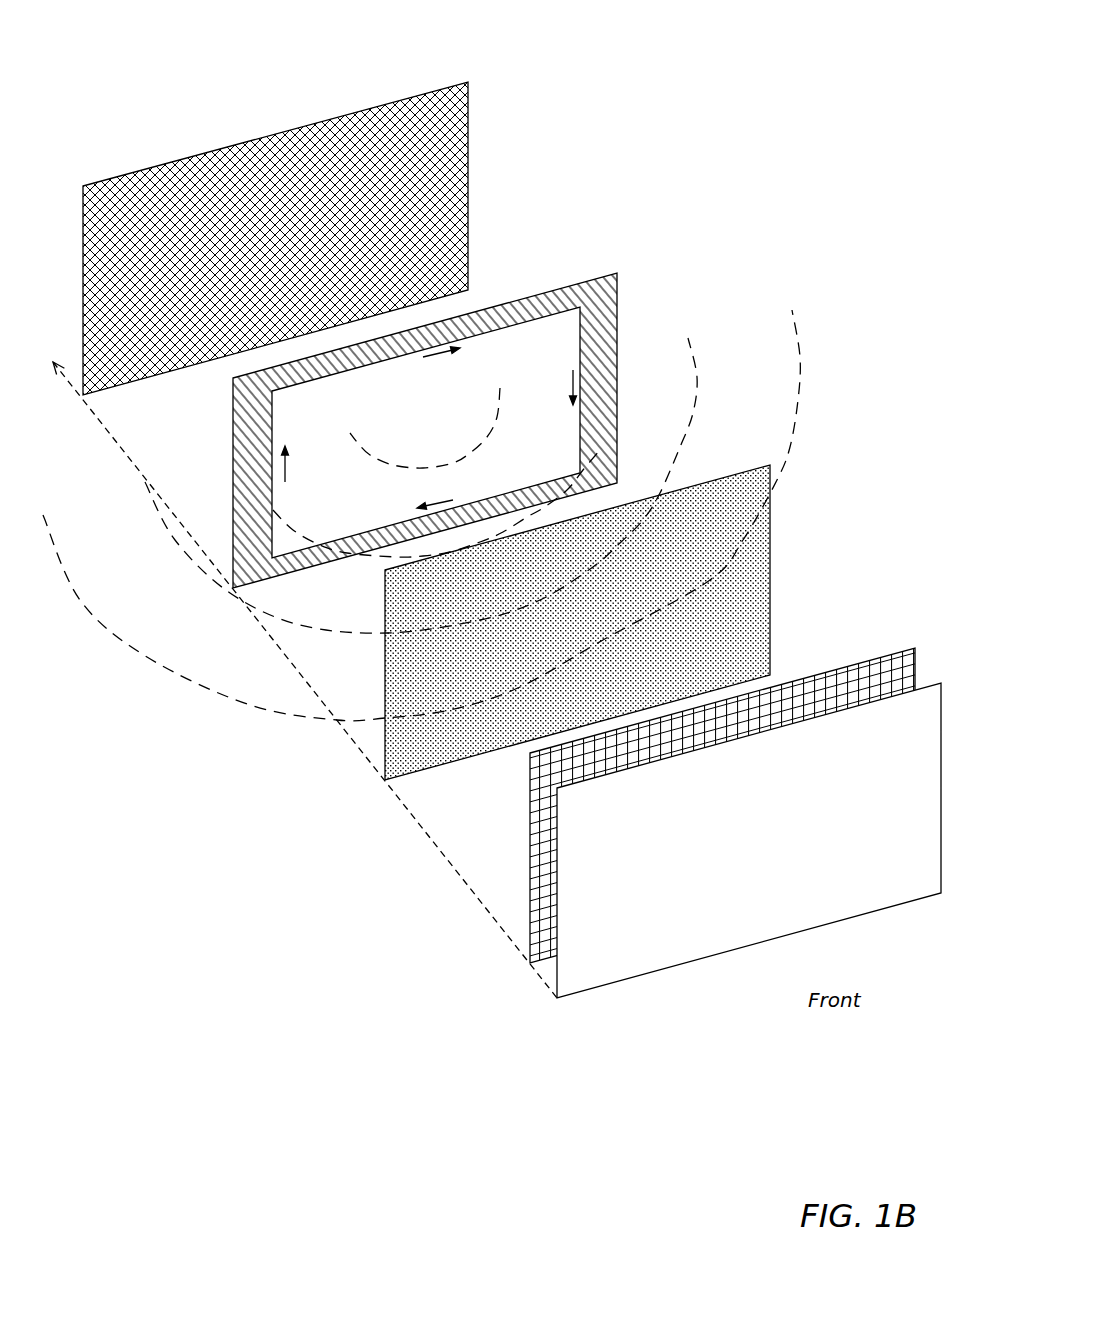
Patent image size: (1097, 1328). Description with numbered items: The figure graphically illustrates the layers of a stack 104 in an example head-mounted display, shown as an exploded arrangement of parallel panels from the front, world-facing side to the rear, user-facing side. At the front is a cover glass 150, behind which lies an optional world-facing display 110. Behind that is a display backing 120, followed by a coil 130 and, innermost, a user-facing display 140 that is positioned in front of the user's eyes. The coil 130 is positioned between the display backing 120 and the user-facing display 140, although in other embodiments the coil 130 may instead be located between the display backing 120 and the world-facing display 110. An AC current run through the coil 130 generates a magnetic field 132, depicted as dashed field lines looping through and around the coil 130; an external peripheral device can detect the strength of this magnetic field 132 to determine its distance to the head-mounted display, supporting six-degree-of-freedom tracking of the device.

The stack 104 is at (765, 103).
The world-facing display 110 is at (728, 790).
The display backing 120 is at (603, 622).
The coil 130 is at (447, 430).
The magnetic field 132 is at (425, 428).
The user-facing display 140 is at (302, 238).
The cover glass 150 is at (759, 826).